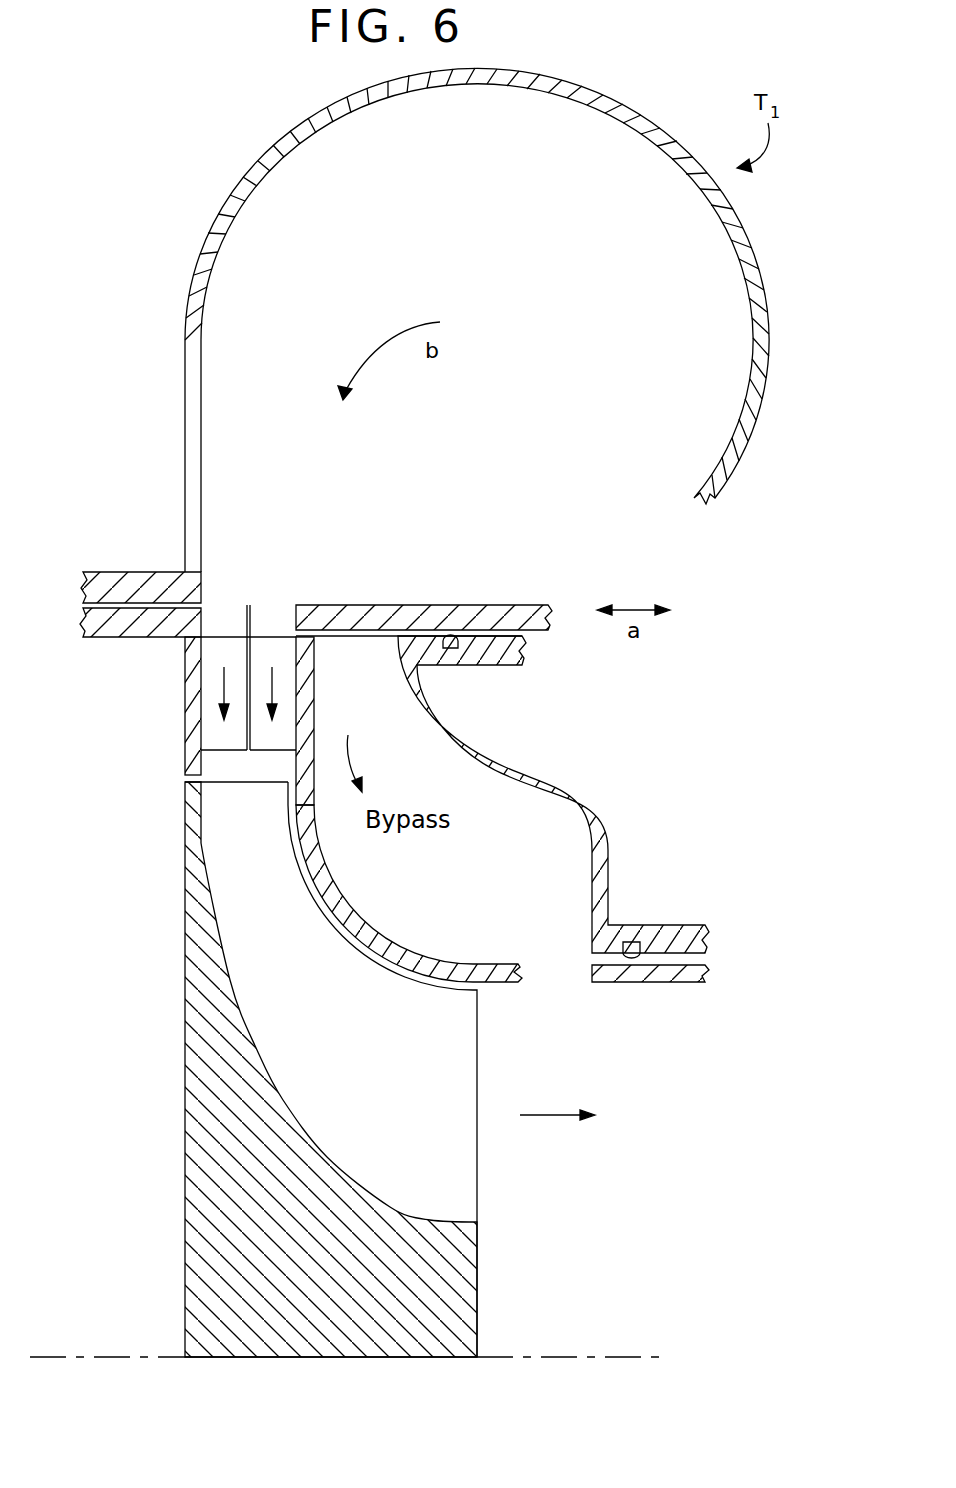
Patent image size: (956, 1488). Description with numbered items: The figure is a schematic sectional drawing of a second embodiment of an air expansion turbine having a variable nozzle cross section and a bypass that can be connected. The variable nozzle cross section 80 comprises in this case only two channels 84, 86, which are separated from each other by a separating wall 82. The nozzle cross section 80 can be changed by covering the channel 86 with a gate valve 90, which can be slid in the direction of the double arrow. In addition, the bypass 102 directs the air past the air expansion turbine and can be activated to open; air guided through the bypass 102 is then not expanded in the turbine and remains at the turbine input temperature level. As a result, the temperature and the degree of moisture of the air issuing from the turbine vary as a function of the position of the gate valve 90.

The variable nozzle cross section 80 is at (222, 622).
The separating wall 82 is at (247, 653).
The channel 84 is at (222, 737).
The channel 86 is at (273, 750).
The gate valve 90 is at (422, 605).
The bypass 102 is at (412, 762).